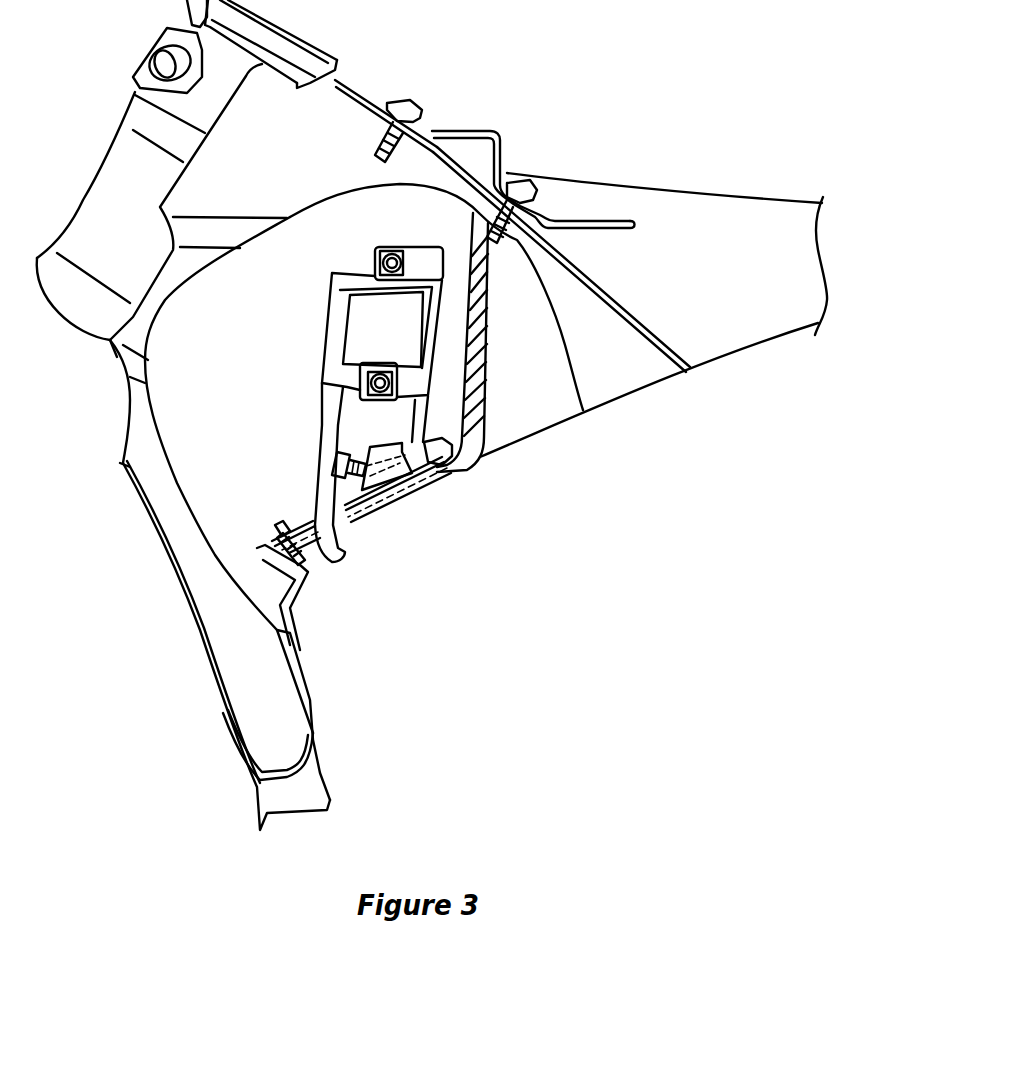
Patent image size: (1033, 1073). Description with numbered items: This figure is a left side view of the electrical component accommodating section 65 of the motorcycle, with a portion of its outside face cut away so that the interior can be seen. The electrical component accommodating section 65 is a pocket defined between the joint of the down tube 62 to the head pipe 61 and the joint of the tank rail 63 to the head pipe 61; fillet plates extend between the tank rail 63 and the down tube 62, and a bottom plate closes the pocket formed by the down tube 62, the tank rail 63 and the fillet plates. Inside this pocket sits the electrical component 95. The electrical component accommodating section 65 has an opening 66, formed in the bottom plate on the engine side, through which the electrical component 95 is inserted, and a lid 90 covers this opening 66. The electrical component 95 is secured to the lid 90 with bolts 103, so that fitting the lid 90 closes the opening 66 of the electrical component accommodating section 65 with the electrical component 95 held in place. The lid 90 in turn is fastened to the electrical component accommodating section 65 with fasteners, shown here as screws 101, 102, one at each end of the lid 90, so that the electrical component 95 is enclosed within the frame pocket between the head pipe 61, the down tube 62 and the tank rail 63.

The head pipe 61 is at (105, 190).
The down tube 62 is at (287, 747).
The tank rail 63 is at (683, 233).
The electrical component accommodating section 65 is at (403, 222).
The opening 66 is at (363, 520).
The lid 90 is at (407, 495).
The electrical component 95 is at (322, 328).
The screw 101 is at (307, 567).
The screw 102 is at (447, 480).
The bolt 103 is at (333, 463).